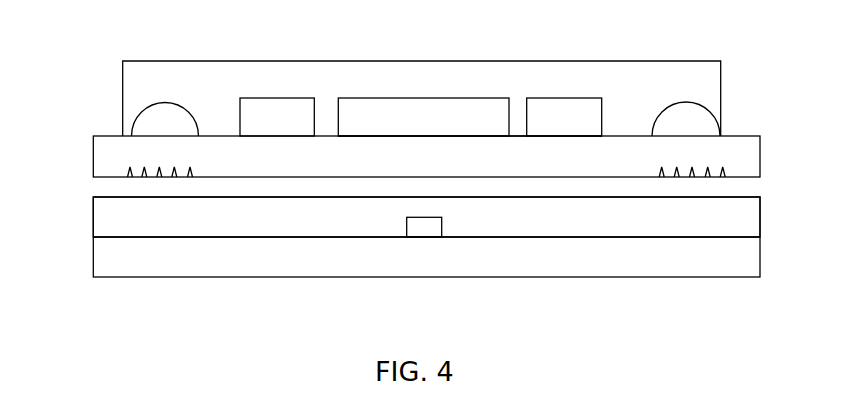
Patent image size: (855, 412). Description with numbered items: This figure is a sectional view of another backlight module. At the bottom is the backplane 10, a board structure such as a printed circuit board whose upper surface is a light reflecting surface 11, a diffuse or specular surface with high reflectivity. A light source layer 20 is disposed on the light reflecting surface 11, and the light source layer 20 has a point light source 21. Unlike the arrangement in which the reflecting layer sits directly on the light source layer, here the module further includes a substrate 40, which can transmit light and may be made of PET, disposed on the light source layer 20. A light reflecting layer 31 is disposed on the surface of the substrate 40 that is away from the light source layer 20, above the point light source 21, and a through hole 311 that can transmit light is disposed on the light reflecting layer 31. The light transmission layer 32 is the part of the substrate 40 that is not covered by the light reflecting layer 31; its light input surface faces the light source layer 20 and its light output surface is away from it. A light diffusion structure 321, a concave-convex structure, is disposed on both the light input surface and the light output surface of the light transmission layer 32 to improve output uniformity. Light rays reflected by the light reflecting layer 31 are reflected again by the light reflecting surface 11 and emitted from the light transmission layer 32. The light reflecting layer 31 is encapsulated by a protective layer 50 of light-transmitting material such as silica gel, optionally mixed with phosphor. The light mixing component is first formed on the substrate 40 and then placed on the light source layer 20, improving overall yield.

The backplane 10 is at (185, 250).
The light reflecting surface 11 is at (150, 237).
The light source layer 20 is at (507, 220).
The point light source 21 is at (420, 228).
The light reflecting layer 31 is at (419, 122).
The through hole 311 is at (325, 117).
The light transmission layer 32 is at (713, 152).
The light diffusion structure 321 is at (130, 172).
The substrate 40 is at (480, 153).
The protective layer 50 is at (546, 78).